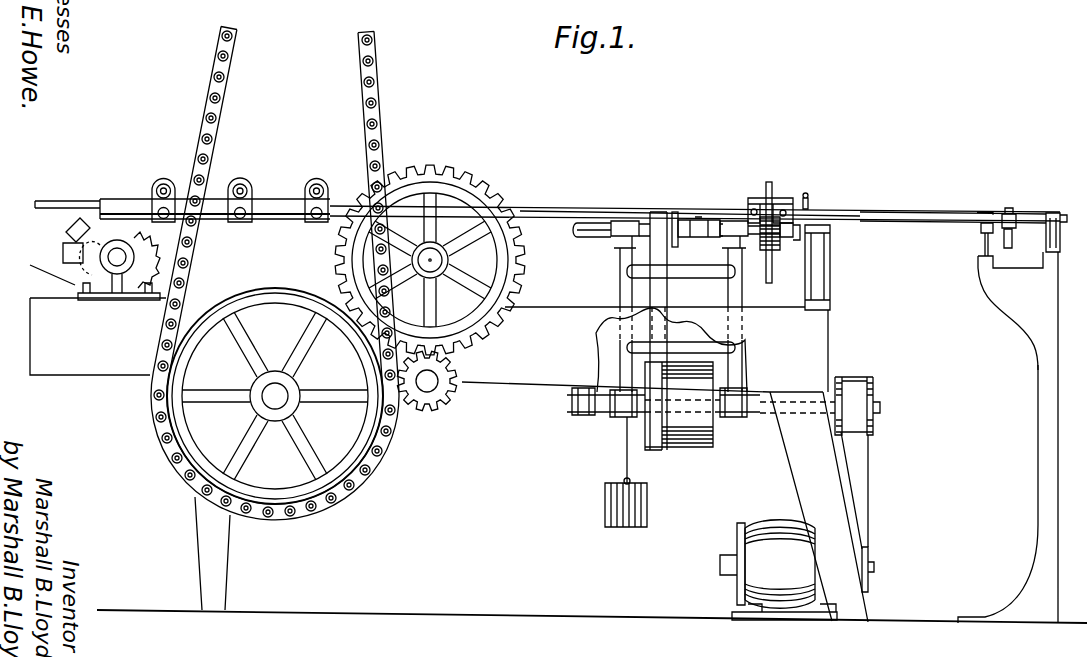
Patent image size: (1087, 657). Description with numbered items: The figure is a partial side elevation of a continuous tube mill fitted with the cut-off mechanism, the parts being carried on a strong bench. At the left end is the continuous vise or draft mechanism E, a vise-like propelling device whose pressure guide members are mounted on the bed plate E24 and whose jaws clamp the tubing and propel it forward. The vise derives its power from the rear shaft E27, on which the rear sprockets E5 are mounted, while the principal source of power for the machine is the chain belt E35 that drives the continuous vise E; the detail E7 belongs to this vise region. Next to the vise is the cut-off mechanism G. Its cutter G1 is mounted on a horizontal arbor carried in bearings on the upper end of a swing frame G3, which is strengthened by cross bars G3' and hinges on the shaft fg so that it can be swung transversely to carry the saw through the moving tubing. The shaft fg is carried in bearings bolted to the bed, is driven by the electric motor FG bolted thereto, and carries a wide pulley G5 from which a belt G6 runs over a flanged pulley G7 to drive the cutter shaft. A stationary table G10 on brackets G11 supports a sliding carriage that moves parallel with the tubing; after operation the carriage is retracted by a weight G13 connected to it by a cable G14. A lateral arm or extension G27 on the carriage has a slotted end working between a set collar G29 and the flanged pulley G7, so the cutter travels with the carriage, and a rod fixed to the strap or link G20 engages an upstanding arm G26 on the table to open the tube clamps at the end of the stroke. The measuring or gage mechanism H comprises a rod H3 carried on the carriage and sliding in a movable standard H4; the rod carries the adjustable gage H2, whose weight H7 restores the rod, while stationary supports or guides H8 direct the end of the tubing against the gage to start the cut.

The continuous vise or draft mechanism E is at (547, 185).
The ratchet and pawl E7 is at (66, 236).
The bed plate E24 is at (264, 231).
The rear sprockets E5 is at (334, 262).
The rear shaft E27 is at (432, 262).
The chain belt E35 is at (380, 461).
The cut-off mechanism G is at (687, 164).
The swing frame G3 is at (663, 306).
The cross bars G3' is at (681, 309).
The cable G14 is at (577, 231).
The flanged pulley G7 is at (645, 188).
The set collar G29 is at (683, 222).
The lateral arm or extension G27 is at (683, 238).
The strap or link G20 is at (761, 196).
The cutter G1 is at (777, 185).
The arm G26 is at (808, 198).
The stationary table G10 is at (800, 236).
The brackets G11 is at (833, 251).
The shaft fg is at (600, 417).
The wide pulley G5 is at (698, 448).
The belt G6 is at (664, 402).
The weight G13 is at (620, 518).
The electric motor FG is at (778, 570).
The measuring or gage mechanism H is at (1032, 209).
The rod H3 is at (920, 203).
The gage H2 is at (1016, 216).
The weight H7 is at (1014, 248).
The supports or guides H8 is at (981, 231).
The movable standard H4 is at (1010, 311).